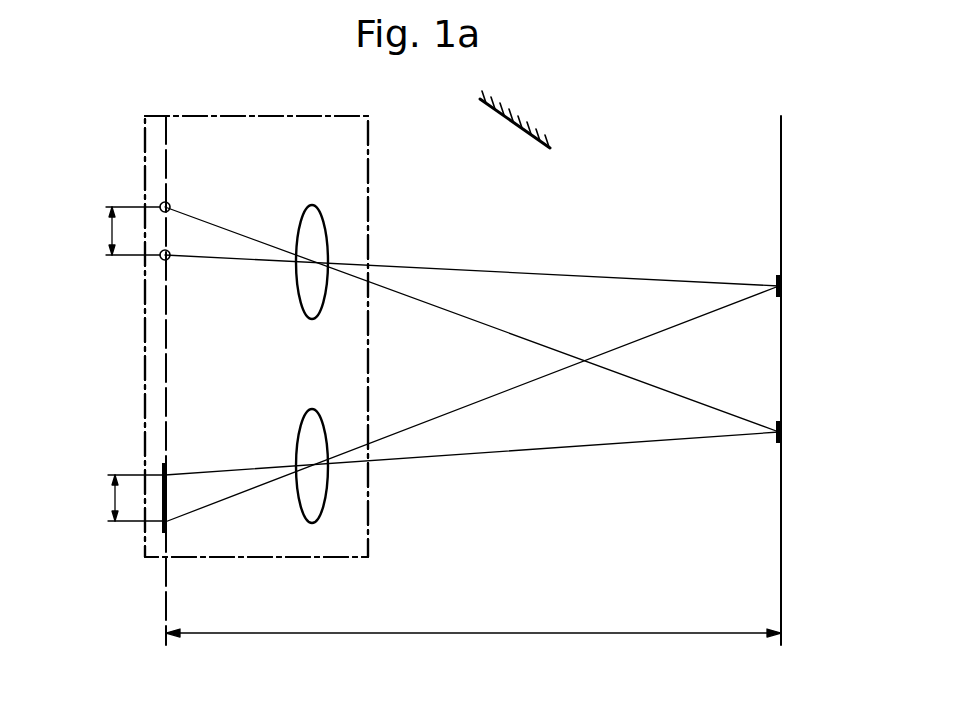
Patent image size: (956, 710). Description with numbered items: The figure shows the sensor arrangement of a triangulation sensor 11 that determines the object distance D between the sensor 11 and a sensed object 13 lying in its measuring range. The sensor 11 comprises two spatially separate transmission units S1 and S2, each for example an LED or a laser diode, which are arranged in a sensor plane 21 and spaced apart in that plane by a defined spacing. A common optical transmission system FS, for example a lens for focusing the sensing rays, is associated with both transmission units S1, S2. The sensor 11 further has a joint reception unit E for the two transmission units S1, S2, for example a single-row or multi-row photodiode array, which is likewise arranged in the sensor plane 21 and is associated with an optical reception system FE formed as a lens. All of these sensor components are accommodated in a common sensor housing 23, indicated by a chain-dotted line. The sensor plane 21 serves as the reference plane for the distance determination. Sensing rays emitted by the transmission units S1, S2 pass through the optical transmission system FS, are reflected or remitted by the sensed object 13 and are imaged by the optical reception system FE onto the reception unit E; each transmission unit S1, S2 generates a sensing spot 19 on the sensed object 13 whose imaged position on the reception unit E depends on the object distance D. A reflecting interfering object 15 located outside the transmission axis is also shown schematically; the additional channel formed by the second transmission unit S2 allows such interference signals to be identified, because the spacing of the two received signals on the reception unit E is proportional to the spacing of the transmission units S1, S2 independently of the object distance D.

The sensor 11 is at (291, 106).
The sensed object 13 is at (783, 530).
The reflecting interfering object 15 is at (544, 131).
The sensing spot 19 is at (783, 288).
The sensor plane 21 is at (164, 592).
The sensor housing 23 is at (369, 526).
The transmission unit S1 is at (169, 204).
The transmission unit S2 is at (169, 259).
The optical transmission system FS is at (314, 218).
The optical reception system FE is at (314, 416).
The reception unit E is at (168, 524).
The object distance D is at (455, 634).